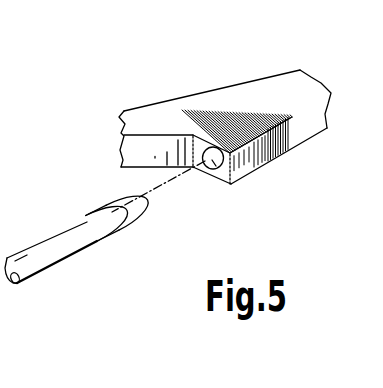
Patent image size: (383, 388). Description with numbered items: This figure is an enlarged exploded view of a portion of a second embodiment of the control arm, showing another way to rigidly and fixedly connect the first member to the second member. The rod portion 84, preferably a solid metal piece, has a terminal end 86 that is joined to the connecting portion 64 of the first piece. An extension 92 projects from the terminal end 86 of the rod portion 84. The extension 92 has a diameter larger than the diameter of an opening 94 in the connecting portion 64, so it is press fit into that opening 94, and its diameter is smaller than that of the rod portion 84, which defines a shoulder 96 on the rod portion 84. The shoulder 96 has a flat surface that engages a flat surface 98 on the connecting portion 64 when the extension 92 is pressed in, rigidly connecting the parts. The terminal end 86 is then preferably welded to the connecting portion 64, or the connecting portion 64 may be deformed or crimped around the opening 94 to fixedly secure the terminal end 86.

The connecting portion 64 is at (142, 118).
The rod portion 84 is at (43, 250).
The terminal end 86 is at (86, 214).
The extension 92 is at (116, 228).
The opening 94 is at (212, 169).
The shoulder 96 is at (108, 234).
The flat surface 98 is at (232, 183).